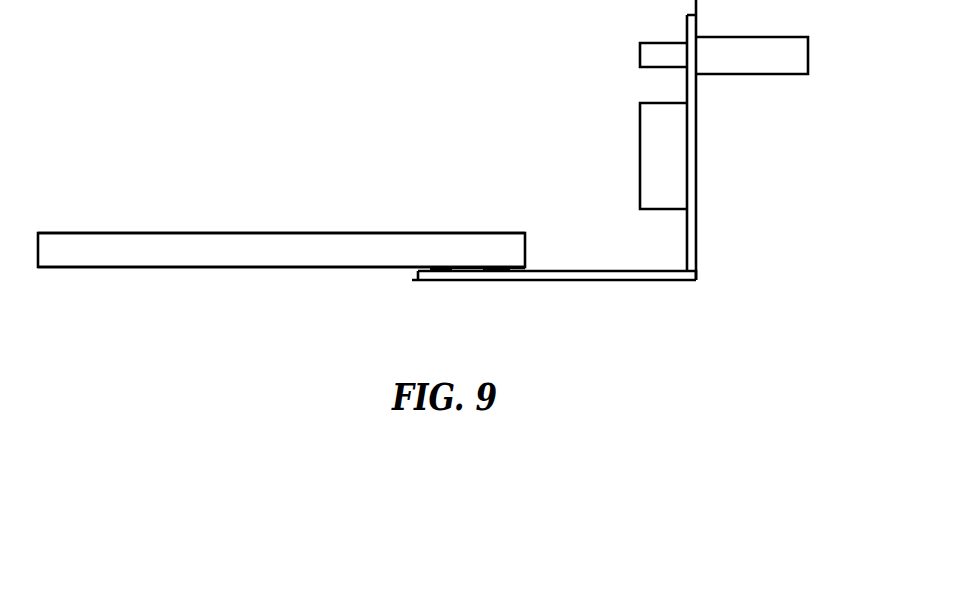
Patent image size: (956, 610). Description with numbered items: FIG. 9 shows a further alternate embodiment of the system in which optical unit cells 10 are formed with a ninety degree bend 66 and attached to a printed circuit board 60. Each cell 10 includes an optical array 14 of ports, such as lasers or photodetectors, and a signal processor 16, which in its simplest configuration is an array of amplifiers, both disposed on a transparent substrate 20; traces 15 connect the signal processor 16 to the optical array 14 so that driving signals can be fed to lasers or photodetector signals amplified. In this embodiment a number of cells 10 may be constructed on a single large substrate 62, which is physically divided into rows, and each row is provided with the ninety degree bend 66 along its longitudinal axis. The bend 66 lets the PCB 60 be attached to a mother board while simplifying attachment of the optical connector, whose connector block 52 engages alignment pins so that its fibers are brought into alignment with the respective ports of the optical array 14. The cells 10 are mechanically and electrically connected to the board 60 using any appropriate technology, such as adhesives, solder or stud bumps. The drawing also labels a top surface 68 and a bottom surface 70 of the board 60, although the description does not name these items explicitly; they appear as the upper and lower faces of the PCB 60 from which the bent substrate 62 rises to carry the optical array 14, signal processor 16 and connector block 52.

The cell 10 is at (380, 196).
The optical array 14 is at (640, 57).
The traces 15 is at (657, 271).
The signal processor 16 is at (645, 160).
The transparent substrate 20 is at (552, 280).
The connector block 52 is at (752, 36).
The printed circuit board 60 is at (325, 267).
The large substrate 62 is at (697, 196).
The 90 degree bend 66 is at (697, 282).
The top surface of circuit board 68 is at (350, 233).
The bottom surface of circuit board 70 is at (240, 266).